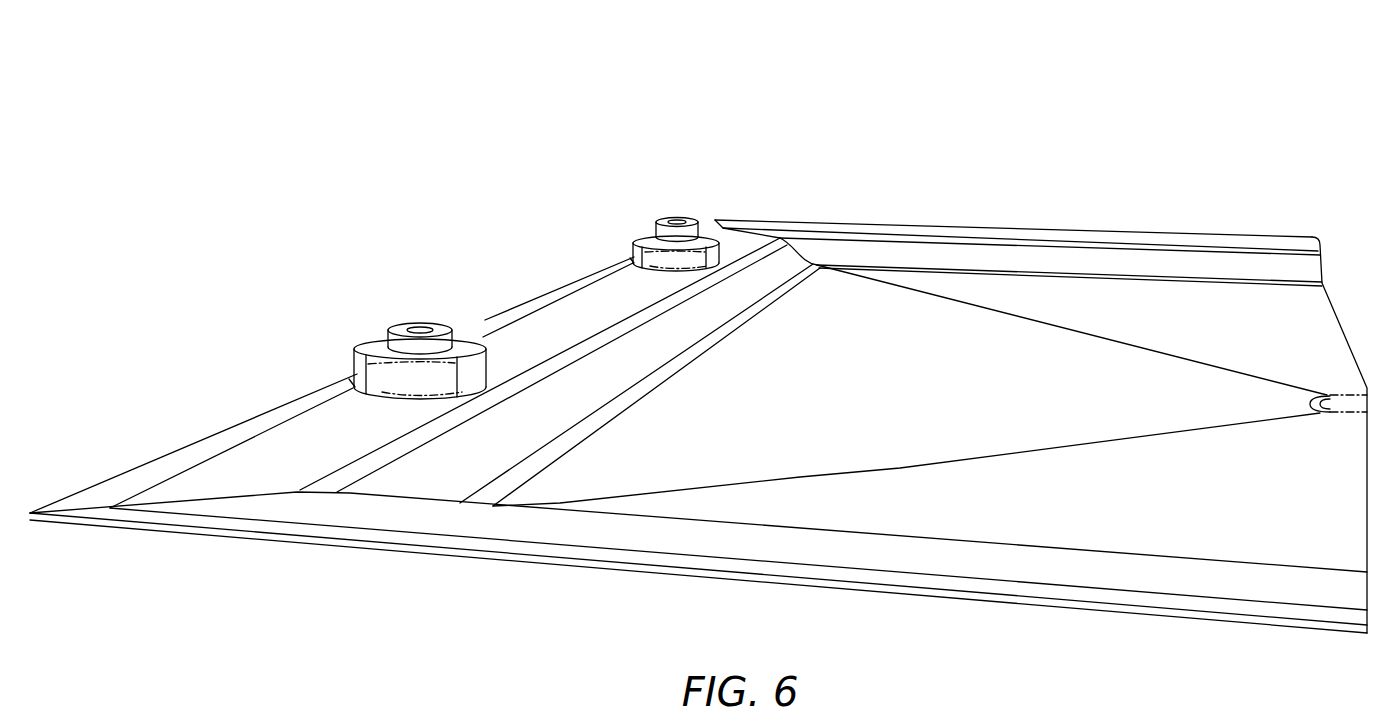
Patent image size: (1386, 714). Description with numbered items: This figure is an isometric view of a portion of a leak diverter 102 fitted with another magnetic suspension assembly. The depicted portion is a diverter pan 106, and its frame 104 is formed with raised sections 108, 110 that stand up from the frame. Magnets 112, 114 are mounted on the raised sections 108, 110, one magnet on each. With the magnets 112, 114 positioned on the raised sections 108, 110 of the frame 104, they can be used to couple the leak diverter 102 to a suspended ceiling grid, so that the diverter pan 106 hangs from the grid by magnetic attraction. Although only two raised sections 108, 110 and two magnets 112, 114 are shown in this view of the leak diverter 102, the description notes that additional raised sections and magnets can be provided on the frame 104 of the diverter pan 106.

The leak diverter 102 is at (1105, 171).
The frame 104 is at (1013, 515).
The diverter pan 106 is at (270, 465).
The raised section 108 is at (356, 349).
The raised section 110 is at (633, 243).
The magnet 112 is at (403, 326).
The magnet 114 is at (662, 220).